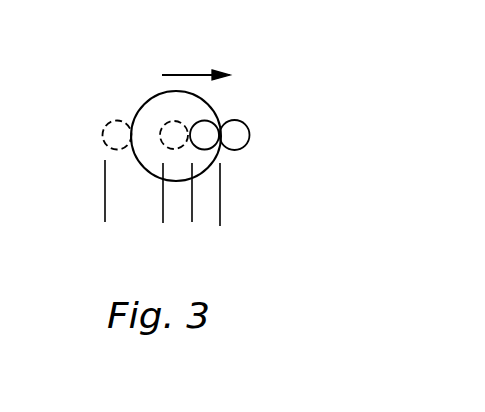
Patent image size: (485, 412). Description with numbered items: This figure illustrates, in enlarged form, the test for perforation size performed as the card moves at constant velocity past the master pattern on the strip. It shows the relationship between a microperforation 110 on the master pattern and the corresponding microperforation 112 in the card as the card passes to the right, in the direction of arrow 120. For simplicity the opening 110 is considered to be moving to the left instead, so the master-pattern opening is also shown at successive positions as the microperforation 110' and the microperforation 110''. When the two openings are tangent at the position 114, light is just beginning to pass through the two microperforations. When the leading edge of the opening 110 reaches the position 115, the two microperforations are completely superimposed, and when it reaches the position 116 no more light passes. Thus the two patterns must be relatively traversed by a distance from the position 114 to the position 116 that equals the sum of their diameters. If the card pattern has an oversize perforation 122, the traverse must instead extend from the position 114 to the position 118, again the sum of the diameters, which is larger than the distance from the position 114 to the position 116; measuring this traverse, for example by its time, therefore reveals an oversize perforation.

The microperforation on the master pattern 110 is at (254, 128).
The microperforation on the master pattern (intermediate position) 110' is at (143, 118).
The microperforation on the master pattern (further position) 110'' is at (94, 130).
The microperforation in the card 112 is at (207, 121).
The tangent position 114 is at (220, 206).
The superimposed position 115 is at (192, 222).
The end position for normal perforation 116 is at (163, 223).
The end position for oversize perforation 118 is at (105, 222).
The arrow indicating direction of card movement 120 is at (187, 75).
The oversize perforation 122 is at (134, 157).